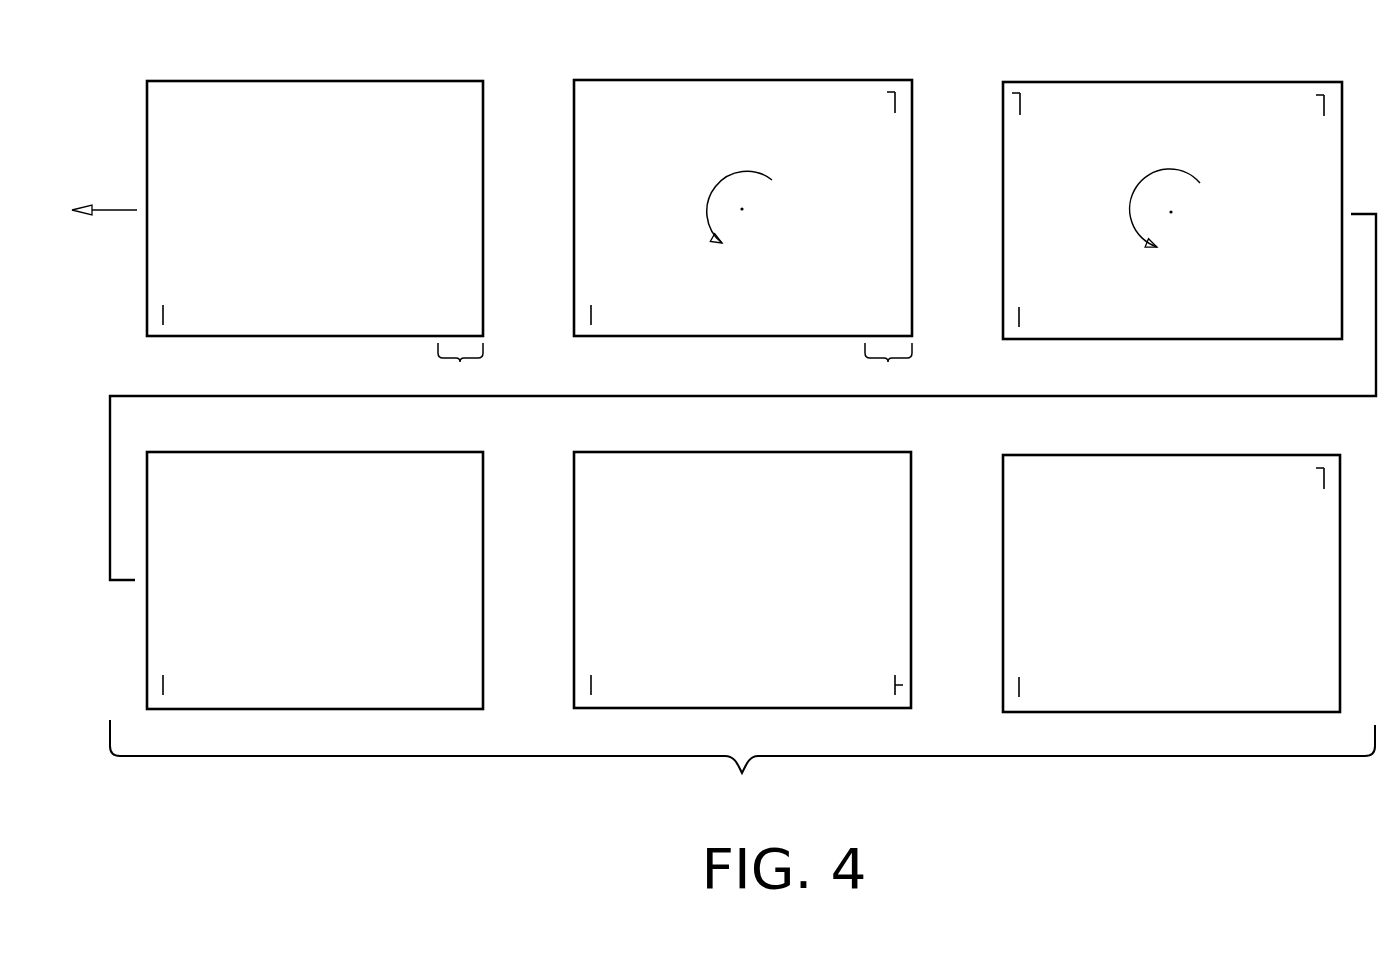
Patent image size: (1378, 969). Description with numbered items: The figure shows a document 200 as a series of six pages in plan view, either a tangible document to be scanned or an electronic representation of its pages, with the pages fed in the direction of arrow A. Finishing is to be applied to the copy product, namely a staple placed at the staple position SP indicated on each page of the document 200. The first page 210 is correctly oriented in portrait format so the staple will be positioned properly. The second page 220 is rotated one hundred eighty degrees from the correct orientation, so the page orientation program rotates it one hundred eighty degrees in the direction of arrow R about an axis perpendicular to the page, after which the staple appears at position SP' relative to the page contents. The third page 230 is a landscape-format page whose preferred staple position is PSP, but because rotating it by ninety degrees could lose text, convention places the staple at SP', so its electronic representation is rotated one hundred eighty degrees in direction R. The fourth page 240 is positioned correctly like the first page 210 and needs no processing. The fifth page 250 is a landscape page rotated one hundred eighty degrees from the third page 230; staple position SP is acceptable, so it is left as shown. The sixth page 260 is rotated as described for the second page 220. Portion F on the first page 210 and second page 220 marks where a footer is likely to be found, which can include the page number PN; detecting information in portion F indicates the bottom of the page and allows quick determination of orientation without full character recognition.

The document 200 is at (742, 765).
The first page 210 is at (343, 88).
The second page 220 is at (772, 88).
The third page 230 is at (1202, 88).
The fourth page 240 is at (343, 463).
The fifth page 250 is at (772, 463).
The sixth page 260 is at (1202, 465).
The staple position SP is at (628, 523).
The rotated staple position SP' is at (1106, 266).
The preferred staple position PSP is at (963, 397).
The page number PN is at (443, 216).
The footer portion F is at (675, 366).
The rotation direction arrow R is at (953, 217).
The feed direction arrow A is at (104, 197).